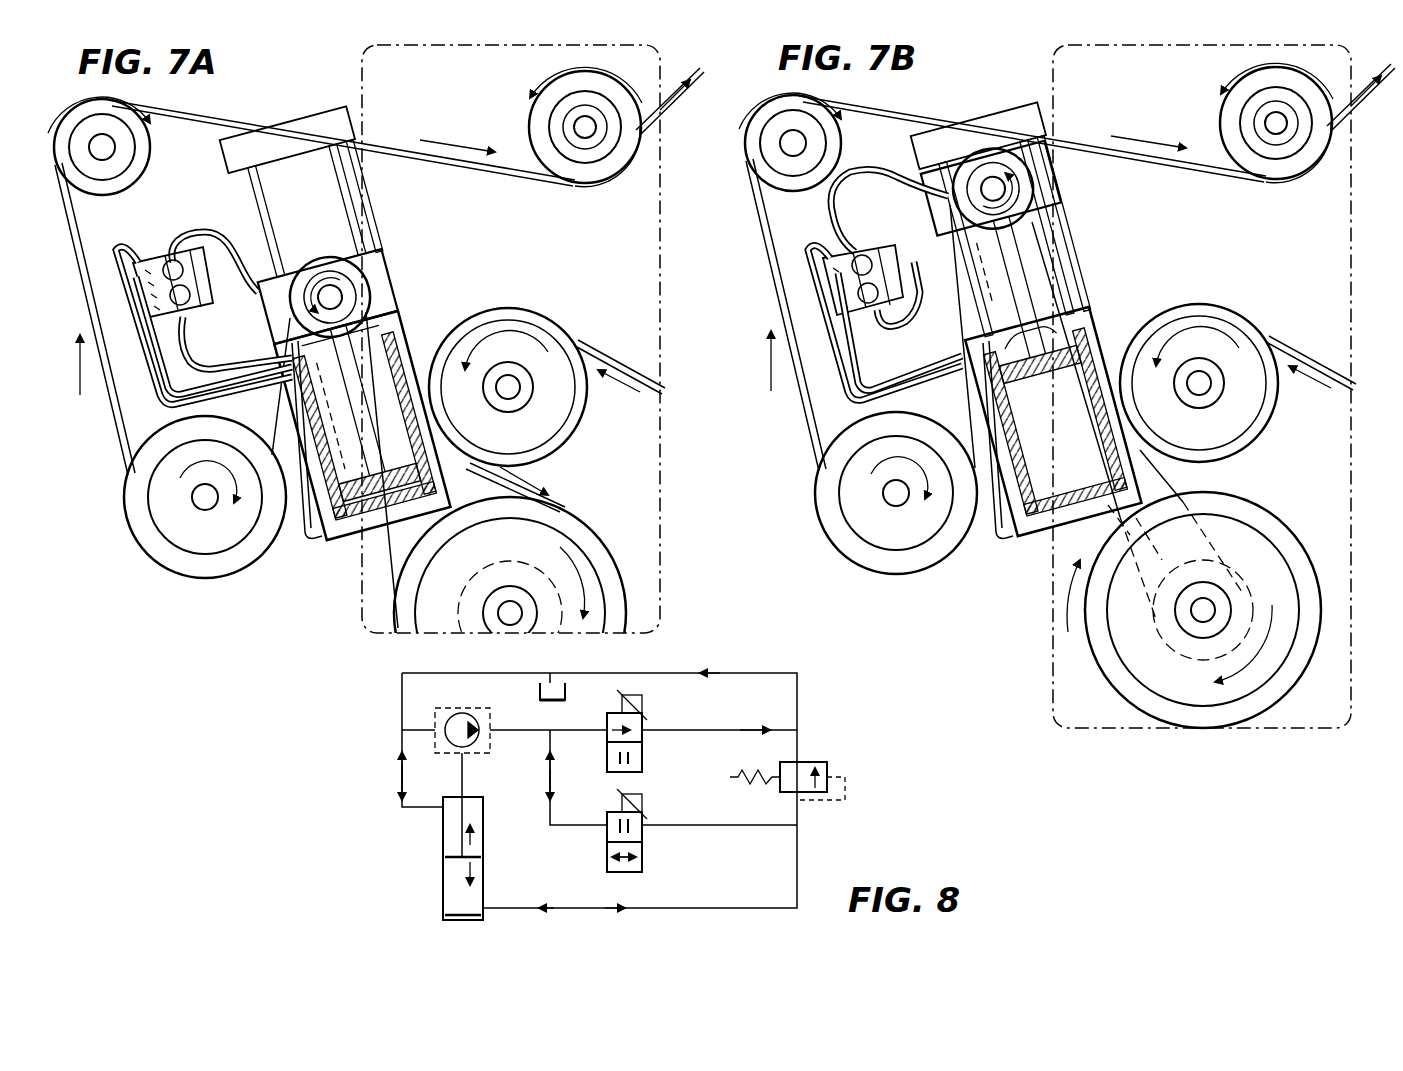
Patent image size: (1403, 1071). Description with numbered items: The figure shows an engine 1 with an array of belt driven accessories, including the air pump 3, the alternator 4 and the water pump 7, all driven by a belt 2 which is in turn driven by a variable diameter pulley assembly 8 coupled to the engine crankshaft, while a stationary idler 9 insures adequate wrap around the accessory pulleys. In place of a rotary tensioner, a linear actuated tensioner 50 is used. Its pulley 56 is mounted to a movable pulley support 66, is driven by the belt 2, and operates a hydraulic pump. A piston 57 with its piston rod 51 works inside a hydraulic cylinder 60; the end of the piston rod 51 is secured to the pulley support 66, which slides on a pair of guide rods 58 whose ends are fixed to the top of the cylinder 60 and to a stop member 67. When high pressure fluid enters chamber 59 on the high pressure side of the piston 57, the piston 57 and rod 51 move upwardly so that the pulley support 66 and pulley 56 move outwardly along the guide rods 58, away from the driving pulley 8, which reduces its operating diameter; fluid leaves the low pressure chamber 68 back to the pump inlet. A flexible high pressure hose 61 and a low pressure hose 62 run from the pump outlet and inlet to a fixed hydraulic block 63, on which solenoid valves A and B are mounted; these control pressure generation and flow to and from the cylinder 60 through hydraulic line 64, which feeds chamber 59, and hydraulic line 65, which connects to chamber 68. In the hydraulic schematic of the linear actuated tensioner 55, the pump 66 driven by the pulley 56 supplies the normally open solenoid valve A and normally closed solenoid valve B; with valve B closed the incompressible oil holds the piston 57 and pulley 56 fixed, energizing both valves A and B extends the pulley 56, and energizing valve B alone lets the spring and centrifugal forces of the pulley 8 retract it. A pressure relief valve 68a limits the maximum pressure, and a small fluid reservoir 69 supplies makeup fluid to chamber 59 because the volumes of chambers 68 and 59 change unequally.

In FIG. 7A, the engine 1 is at (660, 555).
In FIG. 7B, the engine 1 is at (1351, 572).
In FIG. 7A, the belt 2 is at (520, 178).
In FIG. 7B, the belt 2 is at (1170, 166).
In FIG. 7A, the air pump 3 is at (245, 545).
In FIG. 7B, the air pump 3 is at (946, 535).
In FIG. 7A, the alternator 4 is at (140, 150).
In FIG. 7B, the alternator 4 is at (831, 146).
In FIG. 7A, the water pump 7 is at (572, 420).
In FIG. 7B, the water pump 7 is at (1262, 400).
In FIG. 7A, the variable diameter pulley assembly 8 is at (598, 530).
In FIG. 7B, the variable diameter pulley assembly 8 is at (1305, 635).
In FIG. 7A, the stationary idler 9 is at (605, 165).
In FIG. 7B, the stationary idler 9 is at (1296, 161).
In FIG. 7A, the linear actuated tensioner 50 is at (362, 328).
In FIG. 7A, the piston rod 51 is at (395, 311).
In FIG. 7B, the linear actuated tensioner 55 is at (1041, 333).
In FIG. 7A, the pulley 56 is at (330, 297).
In FIG. 7B, the pulley 56 is at (993, 189).
In FIG. 7A, the piston 57 is at (380, 482).
In FIG. 7B, the piston 57 is at (1040, 364).
In FIG. 8, the piston 57 is at (443, 858).
In FIG. 7A, the guide rods 58 is at (315, 209).
In FIG. 7B, the guide rods 58 is at (1015, 237).
In FIG. 7A, the chamber 59 is at (365, 426).
In FIG. 7B, the chamber 59 is at (1056, 422).
In FIG. 8, the chamber 59 is at (440, 898).
In FIG. 7A, the hydraulic cylinder 60 is at (347, 403).
In FIG. 7B, the hydraulic cylinder 60 is at (1008, 290).
In FIG. 8, the hydraulic cylinder 60 is at (483, 840).
In FIG. 7A, the high pressure hose 61 is at (212, 237).
In FIG. 7B, the high pressure hose 61 is at (890, 195).
In FIG. 7A, the low pressure hose 62 is at (213, 346).
In FIG. 7B, the low pressure hose 62 is at (915, 325).
In FIG. 7A, the hydraulic block 63 is at (215, 300).
In FIG. 7B, the hydraulic block 63 is at (895, 247).
In FIG. 7A, the hydraulic line 64 is at (137, 368).
In FIG. 7B, the hydraulic line 64 is at (912, 397).
In FIG. 7A, the hydraulic line 65 is at (228, 395).
In FIG. 7B, the hydraulic line 65 is at (903, 370).
In FIG. 7A, the pulley support 66 is at (328, 296).
In FIG. 7B, the pulley support 66 is at (991, 188).
In FIG. 8, the pulley support 66 is at (475, 700).
In FIG. 7A, the stop member 67 is at (287, 139).
In FIG. 7B, the stop member 67 is at (978, 135).
In FIG. 7A, the chamber 68 is at (362, 425).
In FIG. 7B, the chamber 68 is at (1053, 421).
In FIG. 8, the chamber 68 is at (483, 808).
In FIG. 8, the pressure relief valve 68a is at (804, 762).
In FIG. 8, the fluid reservoir 69 is at (566, 690).
In FIG. 8, the solenoid valve A is at (649, 730).
In FIG. 8, the solenoid valve B is at (648, 829).